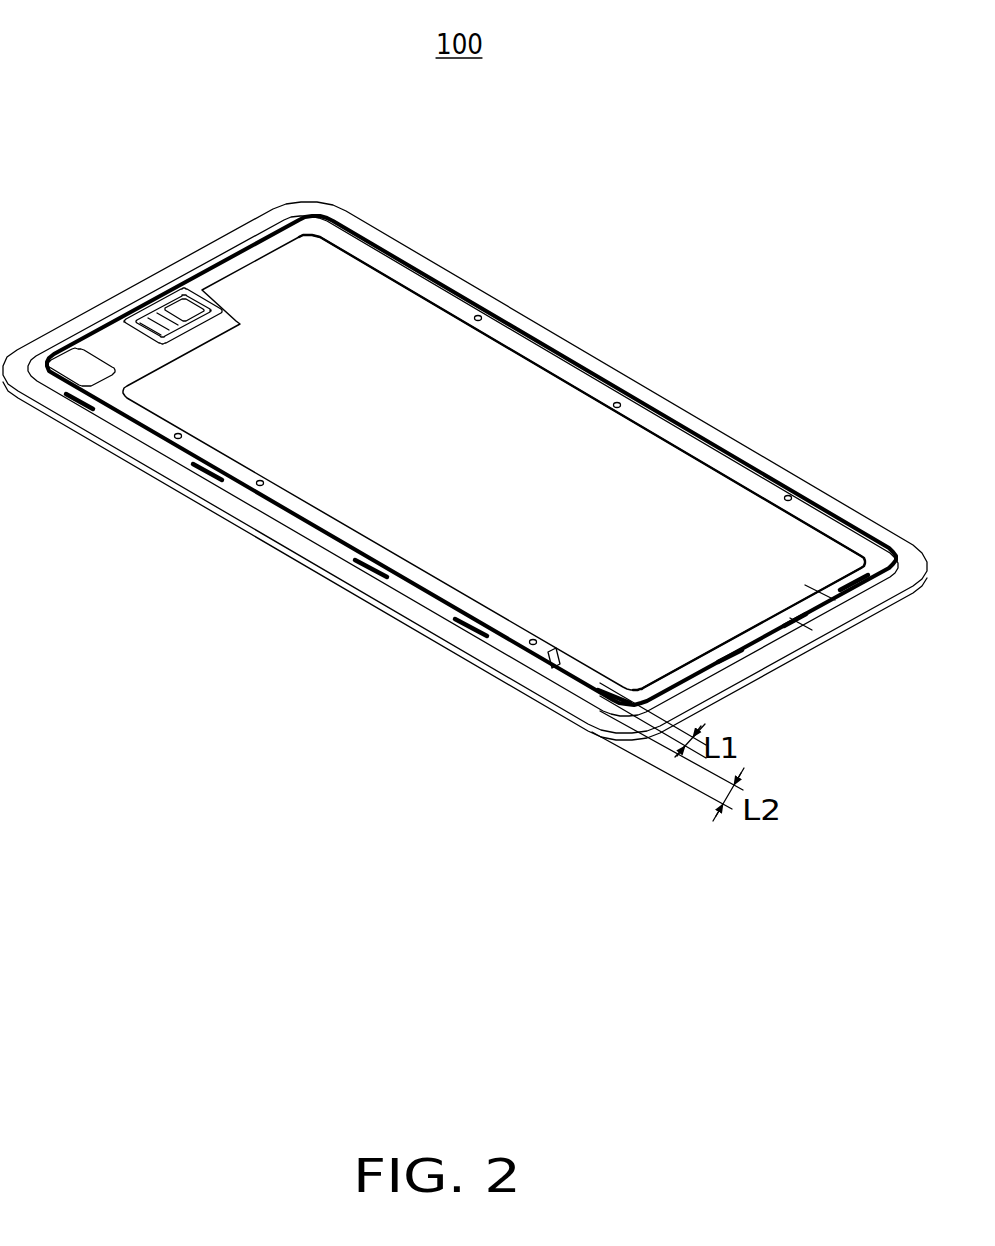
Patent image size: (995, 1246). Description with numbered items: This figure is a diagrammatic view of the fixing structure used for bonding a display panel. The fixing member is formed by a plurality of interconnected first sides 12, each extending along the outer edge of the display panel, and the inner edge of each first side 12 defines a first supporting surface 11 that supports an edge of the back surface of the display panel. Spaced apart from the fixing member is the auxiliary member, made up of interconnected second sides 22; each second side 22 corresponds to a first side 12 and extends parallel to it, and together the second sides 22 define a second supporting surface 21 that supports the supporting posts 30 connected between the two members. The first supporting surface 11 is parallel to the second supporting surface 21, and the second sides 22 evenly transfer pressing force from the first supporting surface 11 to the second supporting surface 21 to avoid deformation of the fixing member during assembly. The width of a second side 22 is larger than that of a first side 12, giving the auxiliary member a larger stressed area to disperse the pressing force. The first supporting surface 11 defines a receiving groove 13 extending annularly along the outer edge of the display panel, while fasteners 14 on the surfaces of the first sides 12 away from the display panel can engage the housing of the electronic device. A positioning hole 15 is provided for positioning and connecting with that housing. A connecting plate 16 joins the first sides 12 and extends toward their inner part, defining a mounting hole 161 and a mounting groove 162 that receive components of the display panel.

The first supporting surface 11 is at (827, 587).
The first side 12 is at (550, 663).
The receiving groove 13 is at (723, 447).
The fastener 14 is at (800, 624).
The positioning hole 15 is at (476, 314).
The connecting plate 16 is at (139, 285).
The mounting hole 161 is at (77, 372).
The mounting groove 162 is at (177, 328).
The second supporting surface 21 is at (243, 513).
The second side 22 is at (467, 457).
The supporting post 30 is at (173, 452).